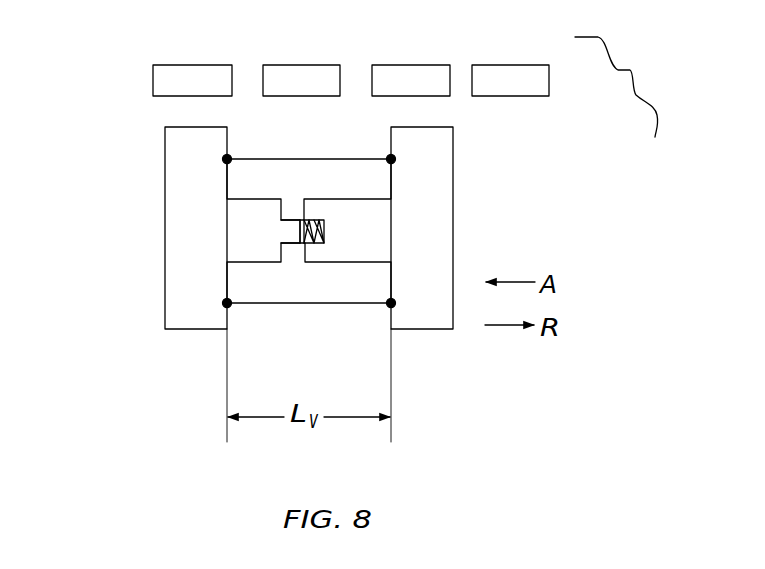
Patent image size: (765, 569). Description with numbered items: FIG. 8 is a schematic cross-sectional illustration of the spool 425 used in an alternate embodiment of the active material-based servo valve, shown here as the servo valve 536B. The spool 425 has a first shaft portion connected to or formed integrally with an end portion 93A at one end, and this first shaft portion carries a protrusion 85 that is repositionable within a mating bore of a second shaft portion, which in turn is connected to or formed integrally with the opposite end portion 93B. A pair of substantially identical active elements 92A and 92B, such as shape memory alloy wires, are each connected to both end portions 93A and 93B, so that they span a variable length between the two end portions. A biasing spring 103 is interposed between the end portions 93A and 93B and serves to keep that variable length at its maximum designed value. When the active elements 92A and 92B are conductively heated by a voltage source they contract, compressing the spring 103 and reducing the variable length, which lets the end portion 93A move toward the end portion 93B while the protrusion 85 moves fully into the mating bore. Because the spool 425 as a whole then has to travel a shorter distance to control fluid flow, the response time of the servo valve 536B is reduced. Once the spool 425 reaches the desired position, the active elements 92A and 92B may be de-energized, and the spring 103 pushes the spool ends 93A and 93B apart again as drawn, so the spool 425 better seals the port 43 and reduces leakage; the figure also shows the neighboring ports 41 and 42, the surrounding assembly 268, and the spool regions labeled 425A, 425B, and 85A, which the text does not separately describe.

The fluid ejection system / assembly 268 is at (106, 126).
The first component block 41 is at (232, 72).
The second component block 42 is at (372, 73).
The port 43 is at (472, 73).
The servo valve 536B is at (639, 87).
The spool 425 is at (301, 276).
The first connector portion 425A is at (243, 232).
The second connector portion 425B is at (348, 247).
The end portion 93A is at (178, 300).
The end portion 93B is at (443, 232).
The active element 92A is at (302, 159).
The active element 92B is at (260, 304).
The protrusion 85 is at (294, 228).
The pin head 85A is at (325, 235).
The biasing spring 103 is at (307, 243).